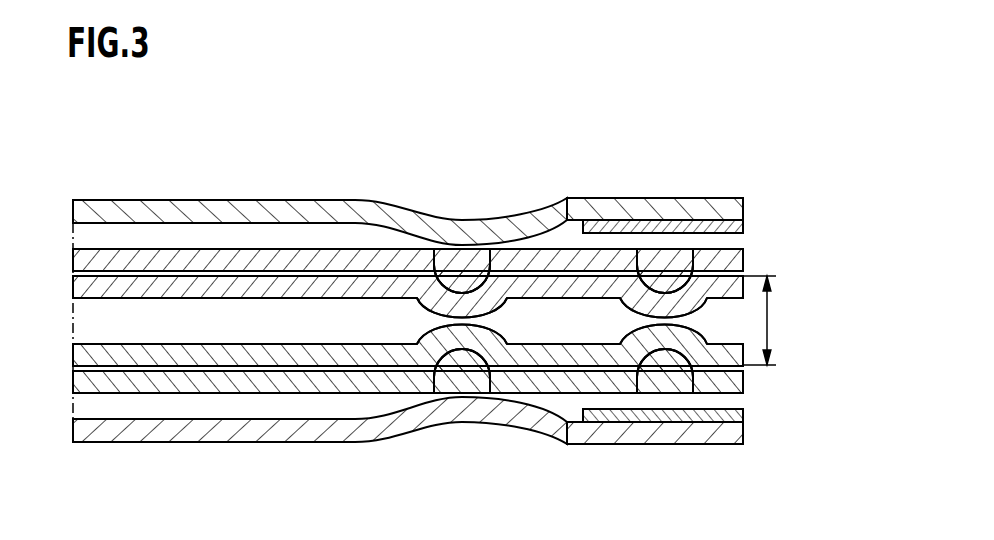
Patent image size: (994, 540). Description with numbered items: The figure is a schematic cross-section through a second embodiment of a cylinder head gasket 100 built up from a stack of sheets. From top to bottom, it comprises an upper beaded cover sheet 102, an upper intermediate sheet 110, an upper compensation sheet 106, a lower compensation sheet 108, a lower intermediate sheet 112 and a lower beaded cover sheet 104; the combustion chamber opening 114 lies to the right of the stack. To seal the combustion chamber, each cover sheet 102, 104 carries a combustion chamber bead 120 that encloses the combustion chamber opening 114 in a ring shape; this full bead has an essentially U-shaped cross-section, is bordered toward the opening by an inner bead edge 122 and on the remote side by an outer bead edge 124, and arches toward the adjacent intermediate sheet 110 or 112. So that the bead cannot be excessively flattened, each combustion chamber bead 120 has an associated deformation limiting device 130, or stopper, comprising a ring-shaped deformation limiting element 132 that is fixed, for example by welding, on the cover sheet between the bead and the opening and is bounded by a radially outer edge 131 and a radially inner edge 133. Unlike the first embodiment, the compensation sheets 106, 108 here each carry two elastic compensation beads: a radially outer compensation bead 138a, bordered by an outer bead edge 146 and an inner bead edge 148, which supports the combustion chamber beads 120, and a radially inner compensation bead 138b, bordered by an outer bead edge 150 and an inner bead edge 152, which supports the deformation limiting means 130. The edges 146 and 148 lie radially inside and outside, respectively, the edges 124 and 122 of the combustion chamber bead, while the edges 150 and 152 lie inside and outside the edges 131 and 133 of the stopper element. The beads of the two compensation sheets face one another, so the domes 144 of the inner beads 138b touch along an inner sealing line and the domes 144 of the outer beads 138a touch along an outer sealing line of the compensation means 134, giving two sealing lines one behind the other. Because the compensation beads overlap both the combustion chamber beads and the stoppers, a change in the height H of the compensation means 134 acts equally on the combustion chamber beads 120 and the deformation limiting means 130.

The cylinder head gasket 100 is at (184, 200).
The upper beaded cover sheet 102 is at (140, 213).
The lower beaded cover sheet 104 is at (172, 428).
The upper compensation sheet 106 is at (94, 294).
The lower compensation sheet 108 is at (94, 360).
The upper intermediate sheet 110 is at (228, 240).
The lower intermediate sheet 112 is at (190, 380).
The combustion chamber opening 114 is at (816, 334).
The combustion chamber bead 120 is at (433, 213).
The inner bead edge 122 is at (567, 199).
The outer bead edge 124 is at (410, 225).
The deformation limiting device 130 is at (729, 190).
The radially outer edge 131 is at (583, 228).
The deformation limiting element 132 is at (744, 205).
The radially inner edge 133 is at (744, 228).
The compensation means 134 is at (429, 316).
The radially outer compensation bead 138a is at (463, 282).
The radially inner compensation bead 138b is at (694, 270).
The dome 144 is at (640, 310).
The outer bead edge 146 is at (440, 247).
The inner bead edge 148 is at (488, 264).
The outer bead edge 150 is at (673, 287).
The inner bead edge 152 is at (744, 260).